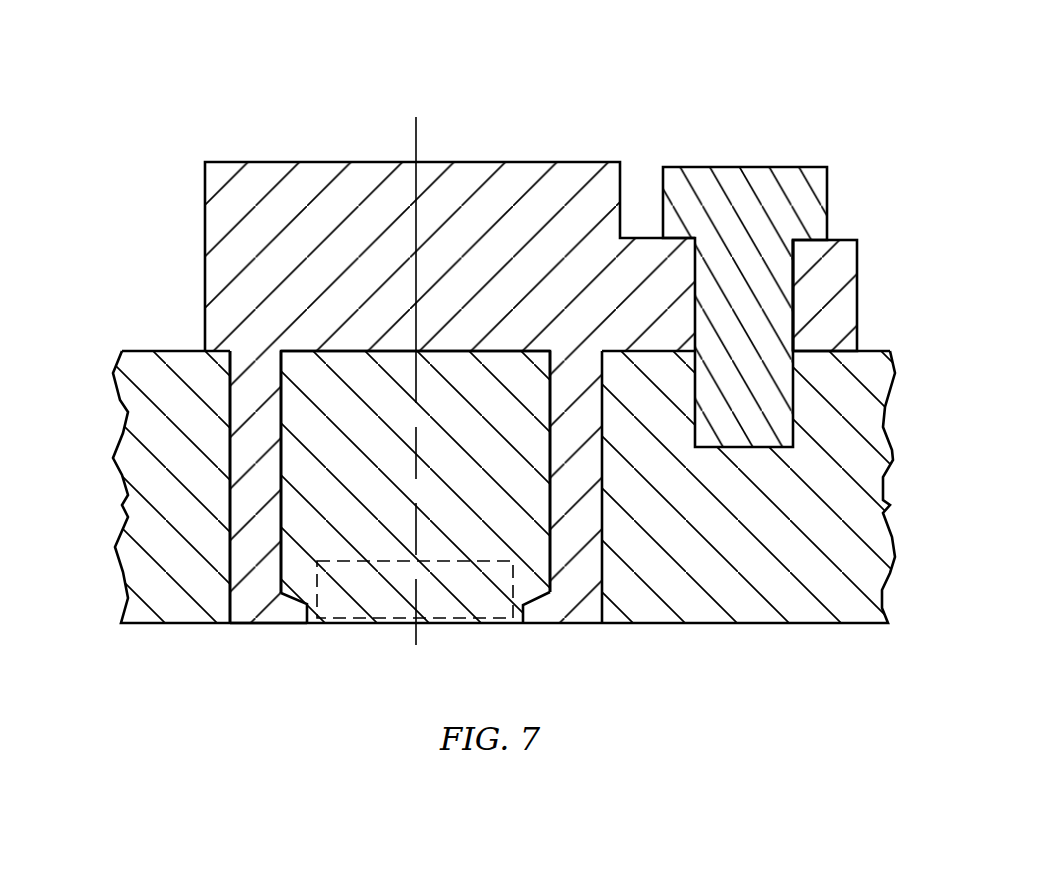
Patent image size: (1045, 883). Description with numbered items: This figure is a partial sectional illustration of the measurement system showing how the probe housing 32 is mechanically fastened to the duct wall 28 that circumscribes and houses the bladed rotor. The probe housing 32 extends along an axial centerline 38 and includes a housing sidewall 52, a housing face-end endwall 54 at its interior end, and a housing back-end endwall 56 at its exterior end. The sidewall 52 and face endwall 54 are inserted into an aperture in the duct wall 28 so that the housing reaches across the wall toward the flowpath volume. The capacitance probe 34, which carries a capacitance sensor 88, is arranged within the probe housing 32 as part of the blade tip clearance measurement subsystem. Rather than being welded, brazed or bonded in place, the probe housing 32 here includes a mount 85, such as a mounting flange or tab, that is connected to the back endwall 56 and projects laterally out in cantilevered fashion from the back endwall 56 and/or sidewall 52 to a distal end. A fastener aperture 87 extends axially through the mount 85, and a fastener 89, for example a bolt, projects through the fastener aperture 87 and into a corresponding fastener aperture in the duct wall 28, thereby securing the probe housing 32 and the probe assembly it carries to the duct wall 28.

The duct wall 28 is at (110, 466).
The probe housing 32 is at (488, 360).
The capacitance probe 34 is at (357, 631).
The axial centerline 38 is at (416, 124).
The housing sidewall 52 is at (224, 539).
The housing face-end endwall 54 is at (262, 631).
The housing back-end endwall 56 is at (200, 250).
The mount 85 is at (864, 258).
The fastener aperture 87 is at (795, 302).
The capacitance sensor 88 is at (382, 626).
The fastener 89 is at (800, 160).